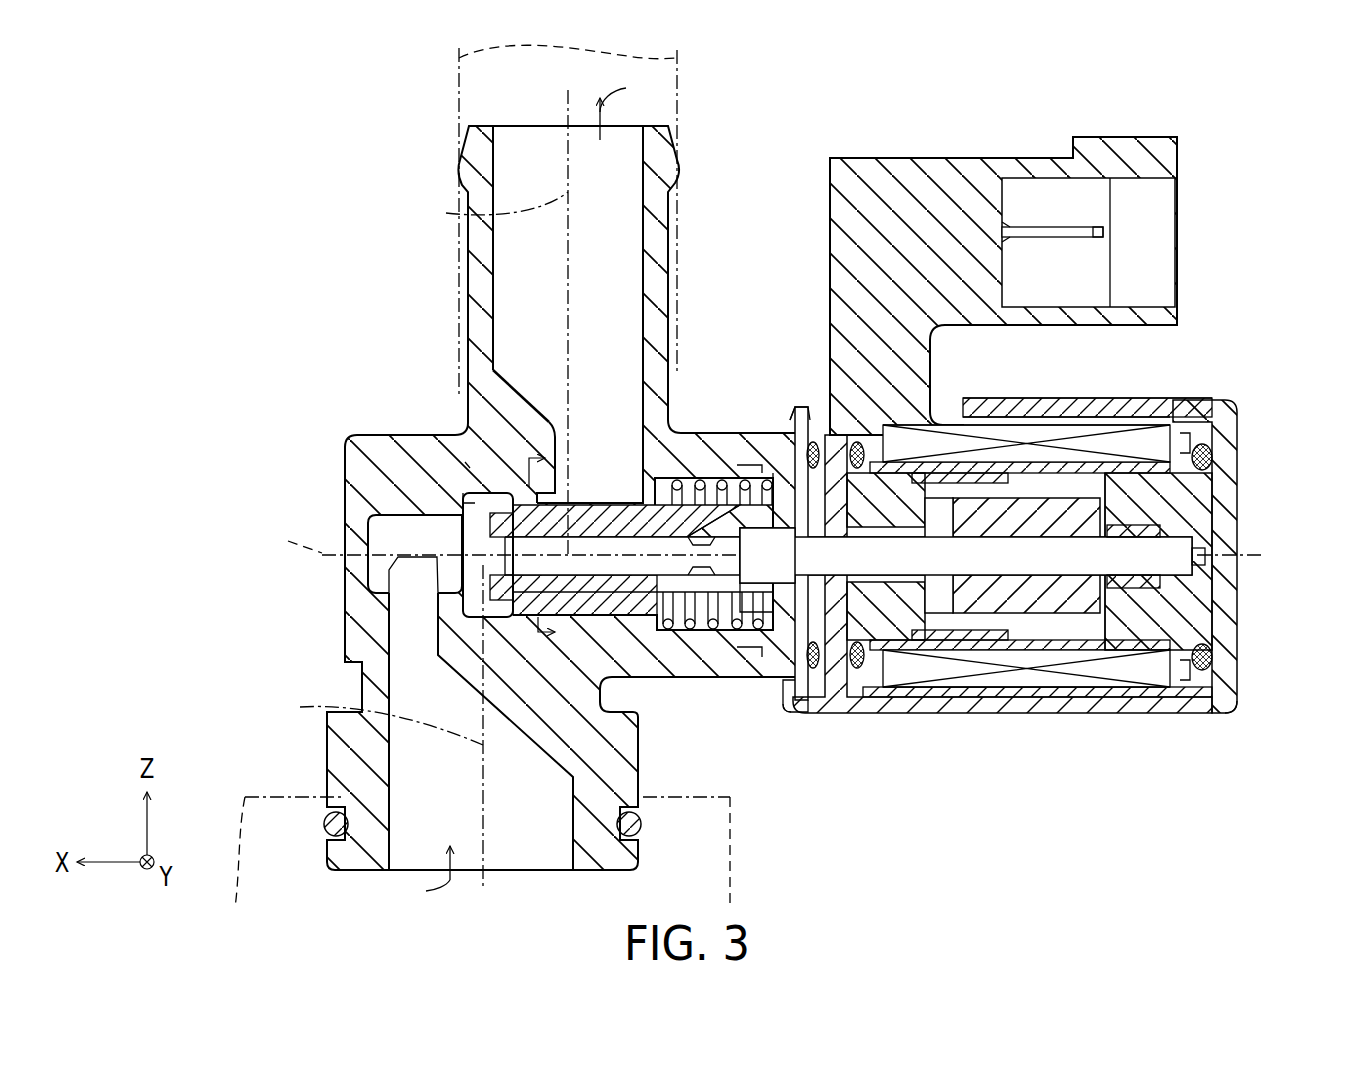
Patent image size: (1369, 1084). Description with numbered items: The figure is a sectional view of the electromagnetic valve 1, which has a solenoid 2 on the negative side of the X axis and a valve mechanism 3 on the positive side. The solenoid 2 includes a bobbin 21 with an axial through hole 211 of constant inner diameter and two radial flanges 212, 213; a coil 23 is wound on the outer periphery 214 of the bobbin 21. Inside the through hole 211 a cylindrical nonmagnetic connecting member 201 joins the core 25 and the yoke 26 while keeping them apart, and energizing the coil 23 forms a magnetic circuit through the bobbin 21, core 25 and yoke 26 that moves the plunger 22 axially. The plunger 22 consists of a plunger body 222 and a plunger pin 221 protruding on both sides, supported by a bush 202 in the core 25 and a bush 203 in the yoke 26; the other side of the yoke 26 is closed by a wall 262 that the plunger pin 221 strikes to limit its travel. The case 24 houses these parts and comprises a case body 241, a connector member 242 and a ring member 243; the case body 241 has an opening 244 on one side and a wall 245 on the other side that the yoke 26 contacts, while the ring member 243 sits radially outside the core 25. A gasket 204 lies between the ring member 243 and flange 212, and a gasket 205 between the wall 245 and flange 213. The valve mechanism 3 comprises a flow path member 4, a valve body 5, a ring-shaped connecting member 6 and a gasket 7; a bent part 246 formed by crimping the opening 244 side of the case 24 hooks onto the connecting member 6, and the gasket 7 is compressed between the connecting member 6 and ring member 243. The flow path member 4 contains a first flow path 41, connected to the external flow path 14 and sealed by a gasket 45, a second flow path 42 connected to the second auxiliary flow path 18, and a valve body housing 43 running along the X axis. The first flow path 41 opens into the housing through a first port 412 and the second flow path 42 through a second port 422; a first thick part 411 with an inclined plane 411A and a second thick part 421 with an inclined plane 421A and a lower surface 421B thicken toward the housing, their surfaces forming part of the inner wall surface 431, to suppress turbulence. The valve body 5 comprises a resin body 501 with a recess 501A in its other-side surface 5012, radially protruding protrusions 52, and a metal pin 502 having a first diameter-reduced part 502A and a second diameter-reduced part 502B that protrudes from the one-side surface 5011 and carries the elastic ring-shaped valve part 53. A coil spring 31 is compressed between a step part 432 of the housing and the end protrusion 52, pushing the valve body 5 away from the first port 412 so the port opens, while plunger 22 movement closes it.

The electromagnetic valve 1 is at (778, 476).
The solenoid 2 is at (1045, 457).
The valve mechanism 3 is at (735, 476).
The flow path member 4 is at (525, 515).
The valve body 5 is at (725, 498).
The connecting member 6 is at (776, 572).
The gasket 7 is at (810, 700).
The external flow path 14 is at (255, 797).
The second auxiliary flow path 18 is at (685, 95).
The bobbin 21 is at (1230, 561).
The plunger 22 is at (1092, 564).
The coil 23 is at (1040, 425).
The case 24 is at (1037, 511).
The core 25 is at (907, 600).
The yoke 26 is at (1147, 639).
The coil spring 31 is at (783, 485).
The first flow path 41 is at (525, 668).
The second flow path 42 is at (564, 314).
The valve body housing 43 is at (626, 632).
The gasket 45 is at (444, 839).
The protrusions 52 is at (427, 392).
The valve part 53 is at (292, 656).
The connecting member 201 is at (1012, 612).
The bush 202 is at (922, 639).
The bush 203 is at (1137, 592).
The gasket 204 is at (855, 780).
The gasket 205 is at (1215, 697).
The through hole 211 is at (1185, 430).
The flange 212 is at (913, 640).
The flange 213 is at (1200, 690).
The outer periphery 214 is at (1000, 447).
The plunger pin 221 is at (1262, 479).
The plunger body 222 is at (1060, 688).
The case body 241 is at (1140, 356).
The connector member 242 is at (946, 192).
The ring member 243 is at (826, 752).
The opening 244 is at (771, 583).
The wall 245 is at (1262, 677).
The bent part 246 is at (790, 712).
The wall 262 is at (1170, 560).
The first thick part 411 is at (527, 707).
The inclined plane 411A is at (582, 815).
The first port 412 is at (445, 520).
The second thick part 421 is at (518, 395).
The inclined plane 421A is at (530, 372).
The lower surface 421B is at (475, 458).
The second port 422 is at (590, 314).
The inner wall surface 431 is at (577, 603).
The step part 432 is at (632, 595).
The body 501 is at (708, 483).
The recess 501A is at (716, 658).
The pin 502 is at (848, 498).
The first diameter-reduced part 502A is at (722, 663).
The second diameter-reduced part 502B is at (386, 582).
The surface 5011 is at (460, 430).
The surface 5012 is at (807, 403).